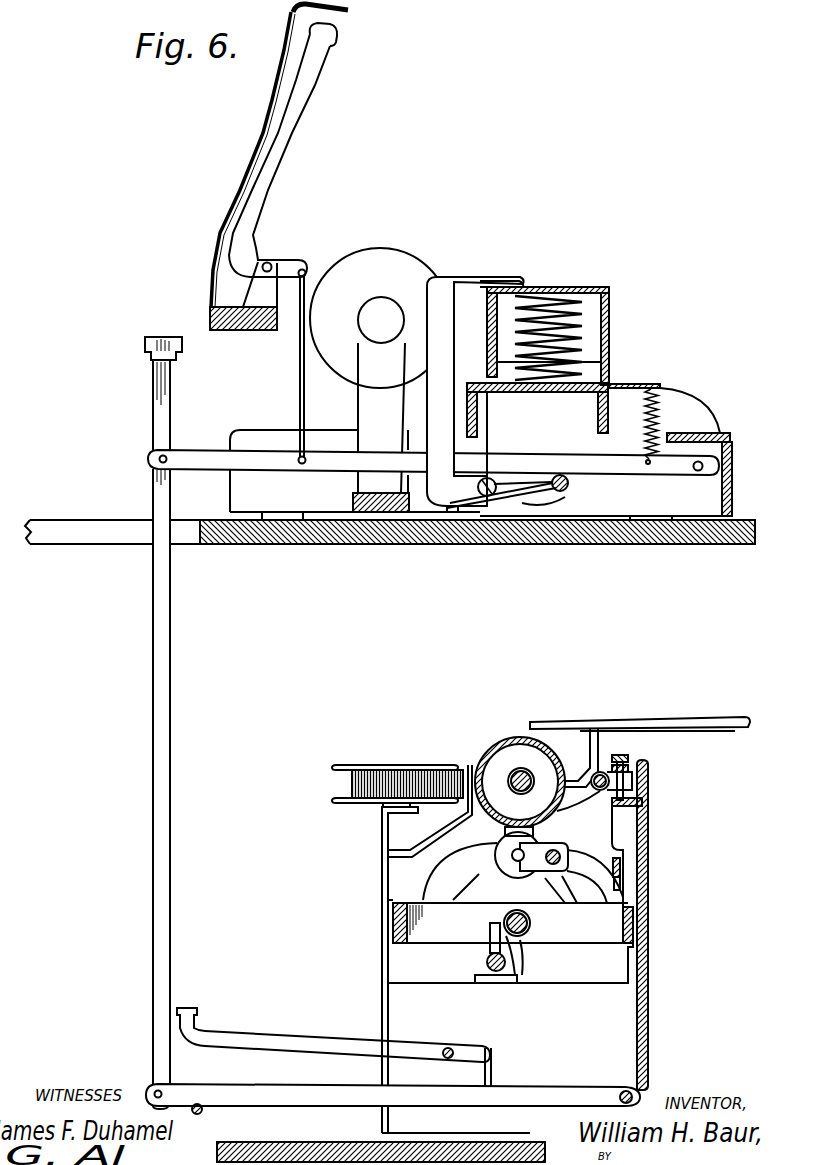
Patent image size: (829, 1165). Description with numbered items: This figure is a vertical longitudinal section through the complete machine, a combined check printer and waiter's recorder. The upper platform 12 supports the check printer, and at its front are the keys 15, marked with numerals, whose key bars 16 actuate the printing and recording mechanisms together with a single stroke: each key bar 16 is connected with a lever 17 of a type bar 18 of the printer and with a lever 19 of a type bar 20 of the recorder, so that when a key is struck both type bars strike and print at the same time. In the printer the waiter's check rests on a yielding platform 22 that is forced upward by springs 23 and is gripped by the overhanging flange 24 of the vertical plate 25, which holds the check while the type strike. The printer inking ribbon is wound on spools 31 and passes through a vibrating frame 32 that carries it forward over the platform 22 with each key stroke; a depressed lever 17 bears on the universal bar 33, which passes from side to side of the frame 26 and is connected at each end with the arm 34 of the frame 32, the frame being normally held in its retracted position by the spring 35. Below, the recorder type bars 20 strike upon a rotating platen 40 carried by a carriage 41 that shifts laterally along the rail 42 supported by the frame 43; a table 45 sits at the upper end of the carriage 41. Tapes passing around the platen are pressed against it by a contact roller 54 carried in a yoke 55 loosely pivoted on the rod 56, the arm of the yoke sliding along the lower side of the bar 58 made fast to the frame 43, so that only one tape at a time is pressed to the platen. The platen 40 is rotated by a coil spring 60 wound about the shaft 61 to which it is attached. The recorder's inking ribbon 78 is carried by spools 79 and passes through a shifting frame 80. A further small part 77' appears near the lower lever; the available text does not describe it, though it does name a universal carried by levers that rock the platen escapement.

The upper platform 12 is at (72, 544).
The keys 15 is at (142, 346).
The key bars 16 is at (153, 605).
The levers of the printer type bars 17 is at (210, 453).
The type bars of the printer 18 is at (279, 167).
The levers of the recorder type bars 19 is at (393, 1083).
The type bars of the recorder 20 is at (321, 1040).
The yielding platform 22 is at (606, 294).
The springs 23 is at (610, 355).
The overhanging flange 24 is at (515, 288).
The vertical plate 25 is at (486, 350).
The frame 26 is at (727, 436).
The spools 31 is at (364, 252).
The vibrating frame 32 is at (470, 275).
The universal bar 33 is at (570, 485).
The arm of the vibrating frame 34 is at (519, 480).
The spring 35 is at (514, 499).
The rotating platen 40 is at (489, 753).
The carriage 41 is at (563, 937).
The rail 42 is at (486, 965).
The frame 43 is at (648, 924).
The table 45 is at (613, 720).
The contact roller 54 is at (500, 867).
The yoke 55 is at (540, 868).
The rod 56 is at (551, 847).
The bar 58 is at (622, 869).
The coil spring 60 is at (533, 781).
The shaft 61 is at (516, 793).
The pin 77' is at (214, 1120).
The inking ribbon 78 is at (350, 788).
The spools 79 is at (373, 766).
The shifting frame 80 is at (468, 766).